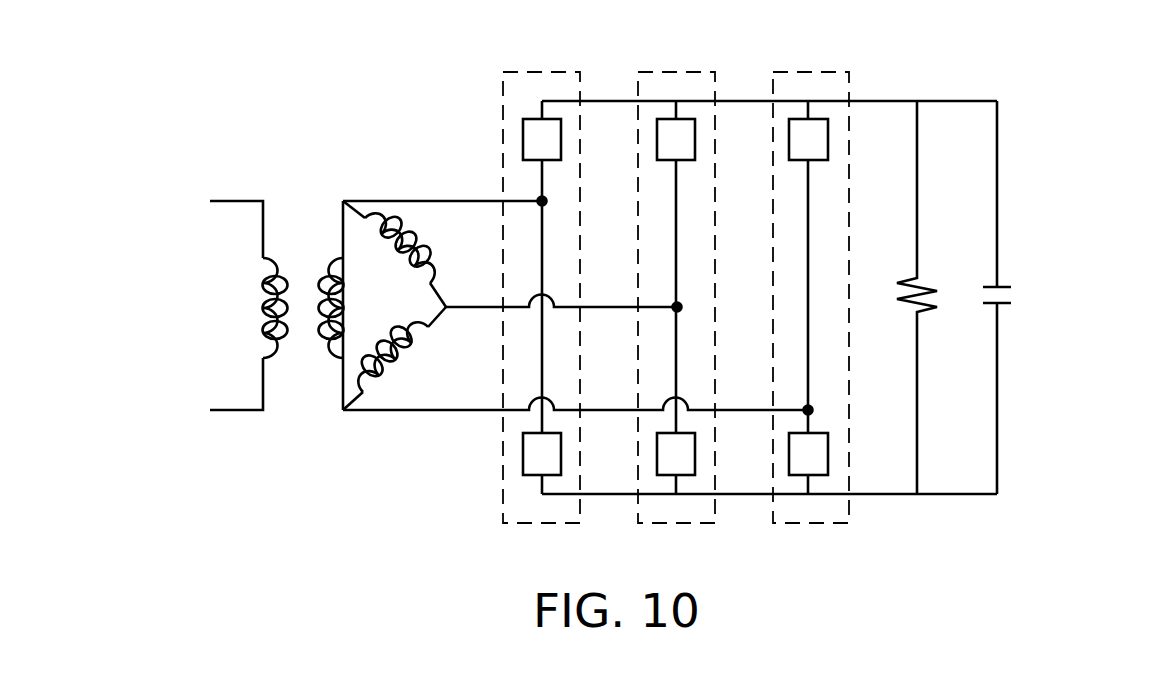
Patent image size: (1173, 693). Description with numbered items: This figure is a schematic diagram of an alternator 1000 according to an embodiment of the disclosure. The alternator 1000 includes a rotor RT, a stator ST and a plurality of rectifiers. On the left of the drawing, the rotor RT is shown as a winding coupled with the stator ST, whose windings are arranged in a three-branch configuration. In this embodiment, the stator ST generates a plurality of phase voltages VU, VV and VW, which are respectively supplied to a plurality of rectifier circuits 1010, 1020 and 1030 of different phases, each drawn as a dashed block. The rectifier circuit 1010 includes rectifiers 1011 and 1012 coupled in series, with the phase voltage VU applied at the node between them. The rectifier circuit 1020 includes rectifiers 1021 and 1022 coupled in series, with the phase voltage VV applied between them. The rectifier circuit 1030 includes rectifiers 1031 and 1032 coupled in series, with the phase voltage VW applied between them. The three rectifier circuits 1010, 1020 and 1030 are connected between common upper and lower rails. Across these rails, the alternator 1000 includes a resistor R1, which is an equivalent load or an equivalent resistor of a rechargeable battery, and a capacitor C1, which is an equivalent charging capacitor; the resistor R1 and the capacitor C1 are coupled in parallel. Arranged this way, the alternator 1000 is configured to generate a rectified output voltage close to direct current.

The alternator 1000 is at (1063, 575).
The rectifier circuit 1010 is at (532, 265).
The rectifier circuit 1020 is at (695, 265).
The rectifier circuit 1030 is at (832, 265).
The rectifier 1011 is at (561, 138).
The rectifier 1012 is at (523, 453).
The rectifier 1021 is at (695, 138).
The rectifier 1022 is at (696, 457).
The rectifier 1031 is at (828, 138).
The rectifier 1032 is at (828, 457).
The rotor RT is at (258, 315).
The stator ST is at (402, 360).
The resistor R1 is at (899, 297).
The capacitor C1 is at (1011, 297).
The phase voltage VU is at (527, 186).
The phase voltage VV is at (662, 290).
The phase voltage VW is at (794, 395).